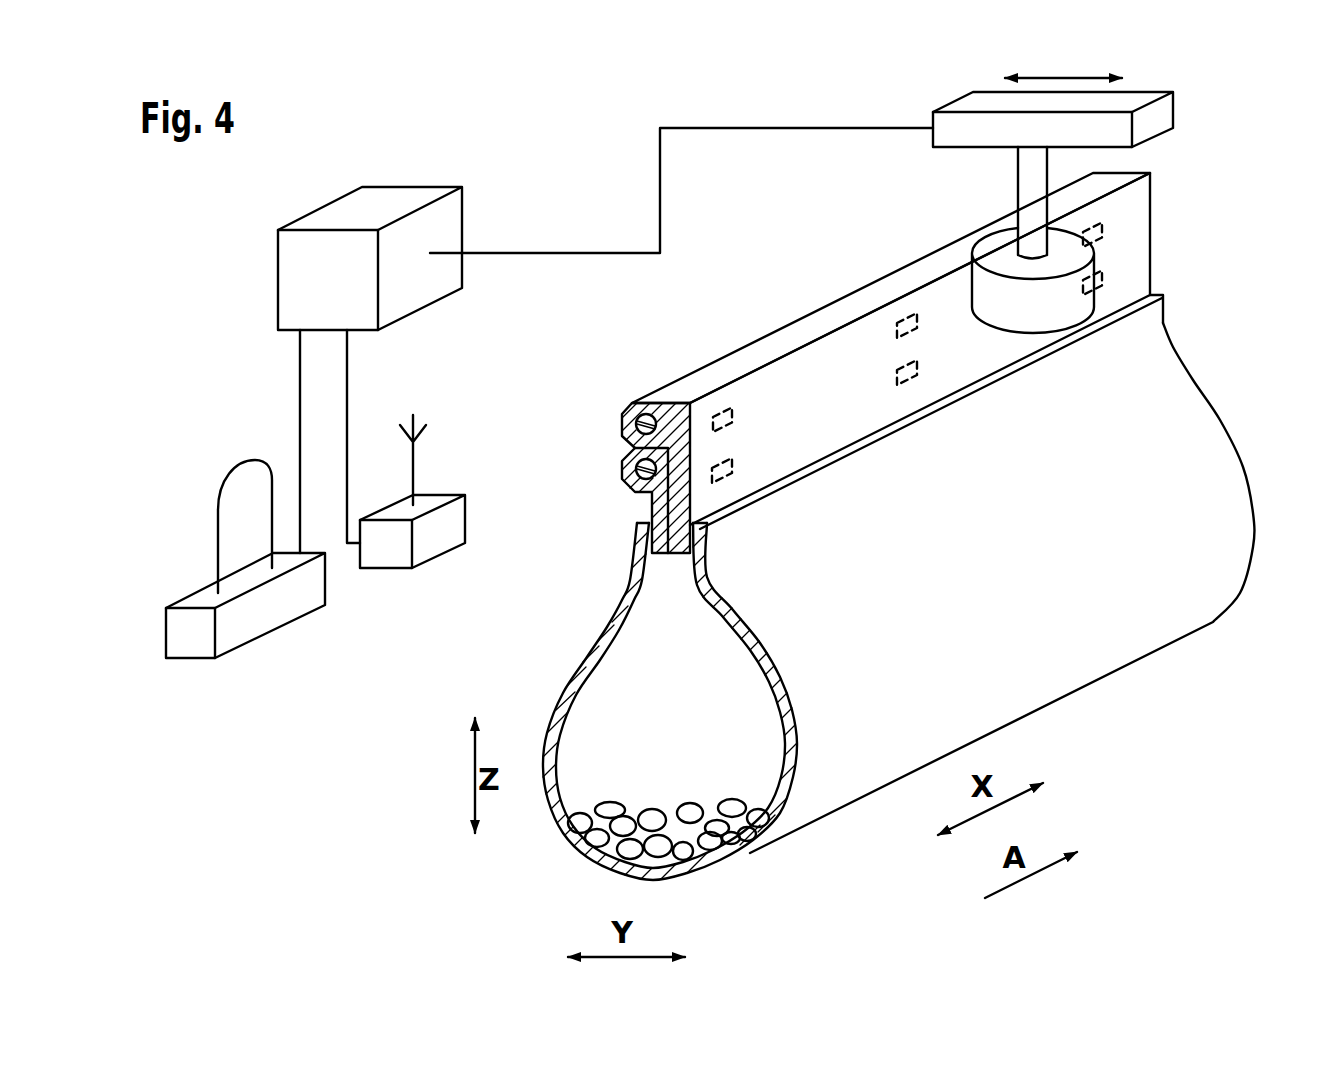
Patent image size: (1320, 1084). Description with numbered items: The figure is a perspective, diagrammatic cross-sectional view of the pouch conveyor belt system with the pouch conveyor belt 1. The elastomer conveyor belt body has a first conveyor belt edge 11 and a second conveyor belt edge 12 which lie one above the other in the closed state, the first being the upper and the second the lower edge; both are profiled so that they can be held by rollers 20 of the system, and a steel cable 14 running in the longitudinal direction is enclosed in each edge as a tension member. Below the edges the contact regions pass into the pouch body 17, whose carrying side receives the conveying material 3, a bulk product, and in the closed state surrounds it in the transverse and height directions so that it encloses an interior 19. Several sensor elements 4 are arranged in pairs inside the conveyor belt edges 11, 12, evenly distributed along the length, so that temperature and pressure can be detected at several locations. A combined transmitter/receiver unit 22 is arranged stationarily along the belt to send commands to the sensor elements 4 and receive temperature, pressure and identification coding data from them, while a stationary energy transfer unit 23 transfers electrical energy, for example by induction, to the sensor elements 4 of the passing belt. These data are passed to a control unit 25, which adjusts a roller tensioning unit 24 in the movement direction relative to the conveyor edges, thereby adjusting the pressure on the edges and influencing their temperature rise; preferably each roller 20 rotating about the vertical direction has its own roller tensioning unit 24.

The pouch conveyor belt 1 is at (473, 915).
The conveying material 3 is at (583, 846).
The sensor elements 4 is at (732, 470).
The first conveyor belt edge 11 is at (613, 399).
The second conveyor belt edge 12 is at (612, 478).
The steel cable 14 is at (636, 468).
The pouch body 17 is at (583, 683).
The interior 19 is at (643, 772).
The rollers 20 is at (1070, 305).
The combined transmitter/receiver unit 22 is at (389, 562).
The energy transfer unit 23 is at (187, 648).
The roller tensioning unit 24 is at (1157, 117).
The control unit 25 is at (298, 277).